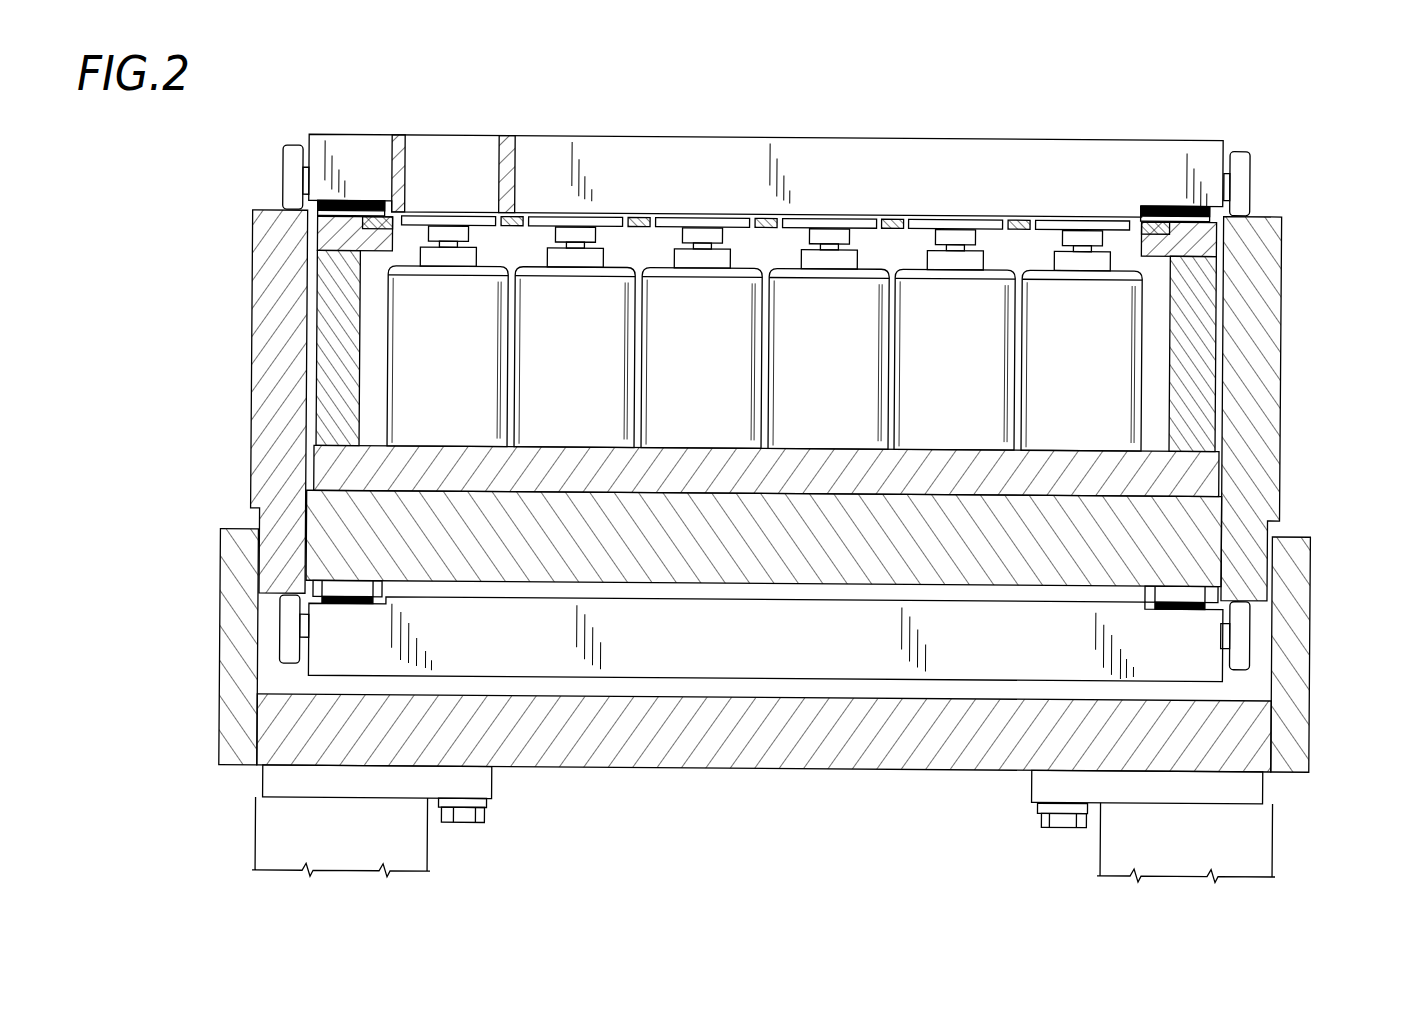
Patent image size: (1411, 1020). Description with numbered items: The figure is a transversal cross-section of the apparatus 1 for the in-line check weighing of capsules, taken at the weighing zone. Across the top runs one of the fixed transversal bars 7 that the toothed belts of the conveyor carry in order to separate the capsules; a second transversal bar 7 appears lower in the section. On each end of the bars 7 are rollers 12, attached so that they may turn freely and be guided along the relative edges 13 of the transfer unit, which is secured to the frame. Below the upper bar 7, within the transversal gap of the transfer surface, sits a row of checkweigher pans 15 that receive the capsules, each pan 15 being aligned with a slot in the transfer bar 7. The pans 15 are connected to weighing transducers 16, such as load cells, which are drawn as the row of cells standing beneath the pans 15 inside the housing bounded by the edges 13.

The apparatus 1 is at (1223, 103).
The transversal bar 7 is at (662, 153).
The roller 12 is at (290, 178).
The edge 13 is at (265, 258).
The checkweigher pan 15 is at (443, 216).
The weighing transducer 16 is at (1097, 362).